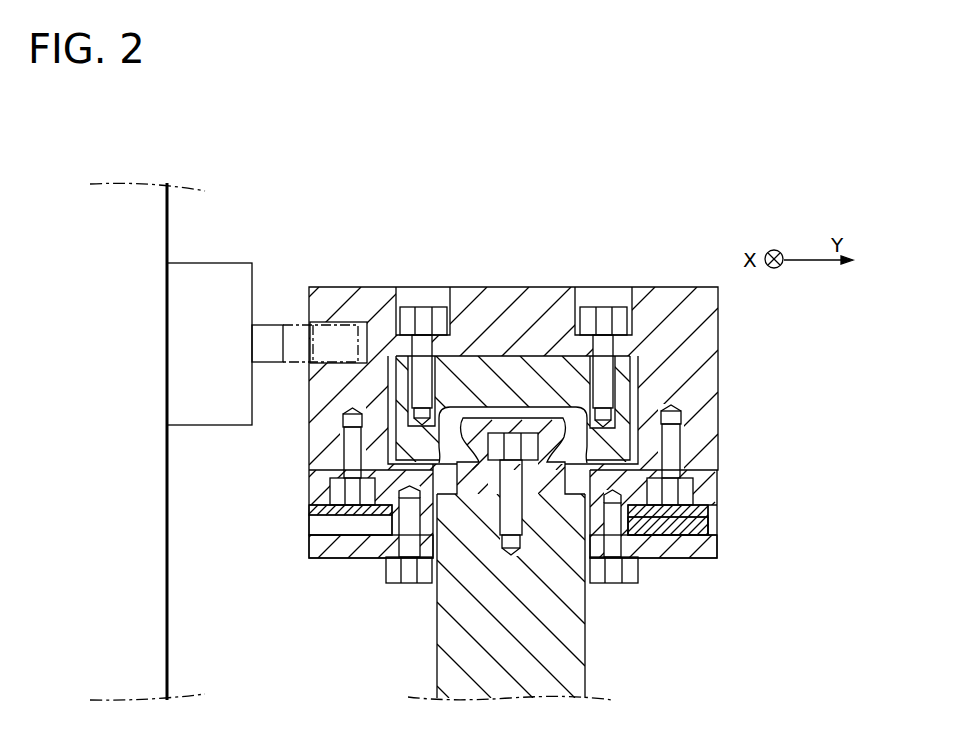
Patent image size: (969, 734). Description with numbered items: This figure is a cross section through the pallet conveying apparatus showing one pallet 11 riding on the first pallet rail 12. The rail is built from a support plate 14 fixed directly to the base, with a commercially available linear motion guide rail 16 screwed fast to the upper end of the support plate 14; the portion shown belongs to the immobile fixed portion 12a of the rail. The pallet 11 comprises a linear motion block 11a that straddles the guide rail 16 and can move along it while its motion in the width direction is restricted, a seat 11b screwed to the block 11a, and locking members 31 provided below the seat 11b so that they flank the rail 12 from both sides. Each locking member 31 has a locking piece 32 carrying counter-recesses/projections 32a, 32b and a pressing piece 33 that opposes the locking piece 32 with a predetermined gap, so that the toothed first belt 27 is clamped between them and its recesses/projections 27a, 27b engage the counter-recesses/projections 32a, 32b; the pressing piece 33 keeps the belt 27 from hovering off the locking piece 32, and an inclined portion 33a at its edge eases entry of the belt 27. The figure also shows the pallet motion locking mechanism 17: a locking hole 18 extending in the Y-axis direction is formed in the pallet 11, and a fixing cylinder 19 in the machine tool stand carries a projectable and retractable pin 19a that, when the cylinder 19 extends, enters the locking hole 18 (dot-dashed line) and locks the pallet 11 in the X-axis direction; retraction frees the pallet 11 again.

The pallet 11 is at (656, 287).
The linear motion block 11a is at (528, 356).
The seat 11b is at (552, 287).
The first pallet rail 12 is at (712, 640).
The fixed portion 12a is at (438, 642).
The support plate 14 is at (587, 677).
The linear motion guide rail 16 is at (547, 480).
The pallet motion locking mechanism 17 is at (274, 265).
The locking hole 18 is at (328, 322).
The fixing cylinder 19 is at (213, 262).
The pin 19a is at (273, 364).
The first belt 27 is at (717, 514).
The recess/projection 27a is at (717, 521).
The recess/projection 27b is at (668, 520).
The locking member 31 is at (356, 563).
The locking piece 32 is at (307, 567).
The counter-recess/projection 32a is at (307, 527).
The counter-recess/projection 32b is at (508, 525).
The pressing piece 33 is at (307, 487).
The inclined portion 33a is at (307, 498).